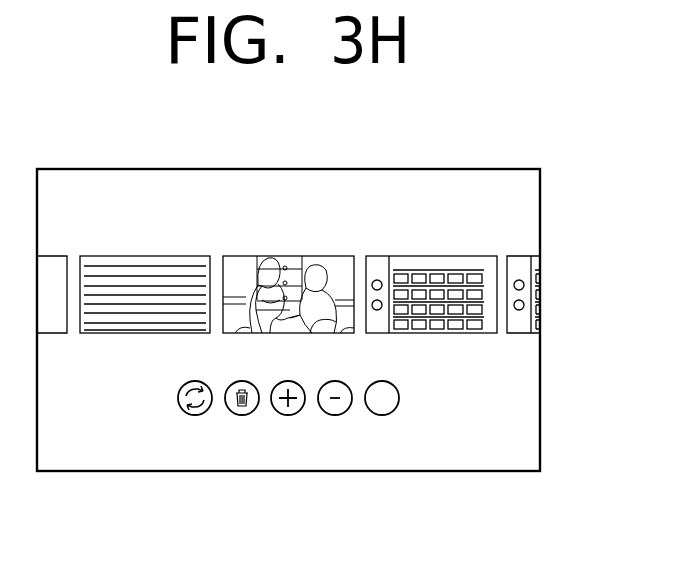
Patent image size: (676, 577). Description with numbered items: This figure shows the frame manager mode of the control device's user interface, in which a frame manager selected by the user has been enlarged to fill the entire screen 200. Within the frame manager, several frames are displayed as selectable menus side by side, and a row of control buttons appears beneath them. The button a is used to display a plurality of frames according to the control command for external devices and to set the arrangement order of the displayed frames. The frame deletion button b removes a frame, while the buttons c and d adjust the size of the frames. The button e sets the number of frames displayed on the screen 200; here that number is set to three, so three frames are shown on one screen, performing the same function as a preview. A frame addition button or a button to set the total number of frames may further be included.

The screen 200 is at (540, 169).
The button a is at (195, 415).
The frame deletion button b is at (242, 415).
The button c is at (288, 415).
The button d is at (335, 415).
The button e is at (382, 415).